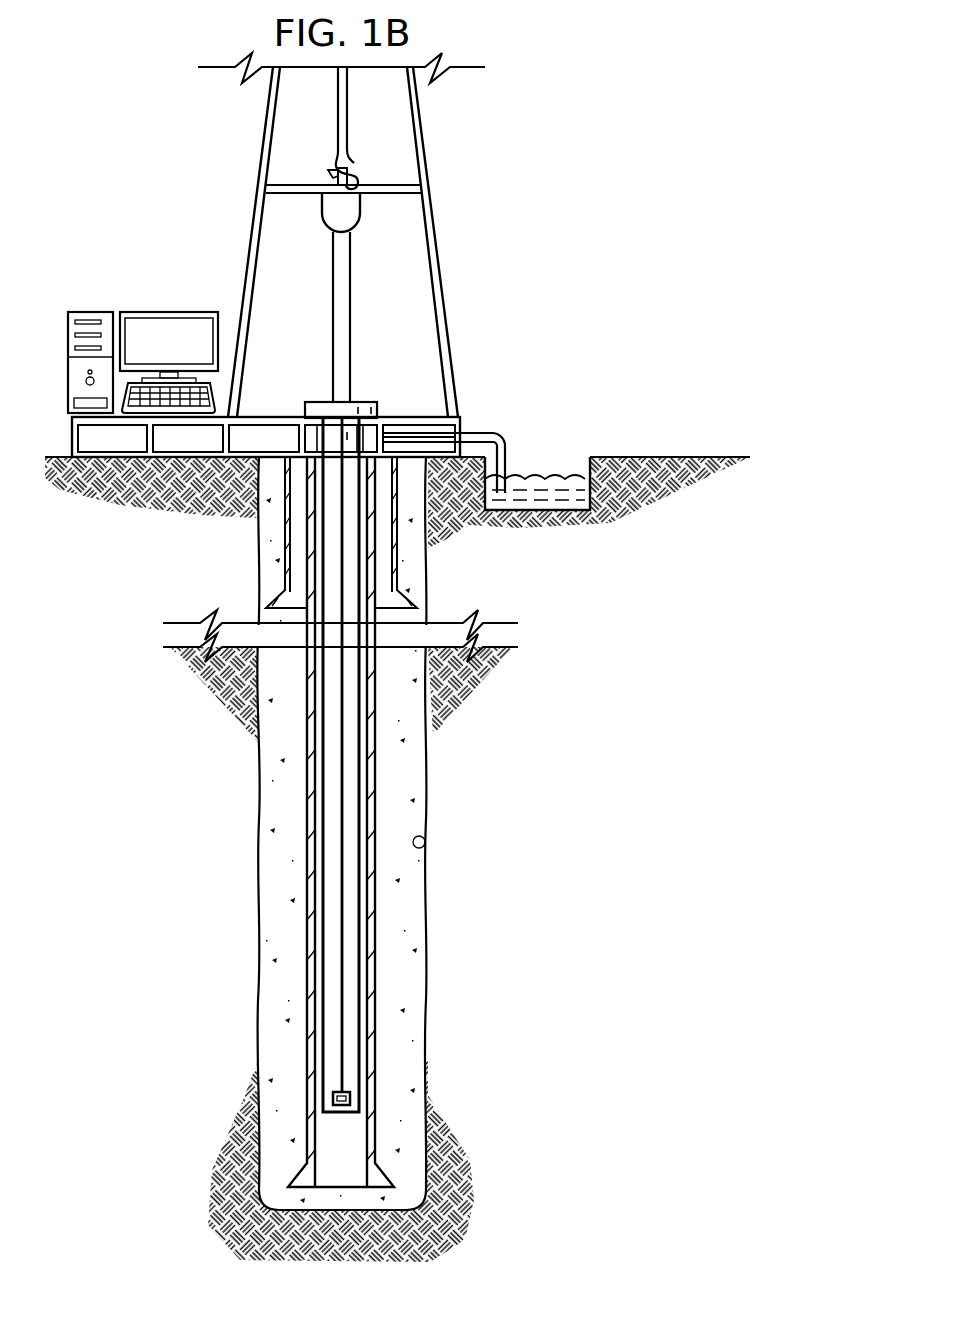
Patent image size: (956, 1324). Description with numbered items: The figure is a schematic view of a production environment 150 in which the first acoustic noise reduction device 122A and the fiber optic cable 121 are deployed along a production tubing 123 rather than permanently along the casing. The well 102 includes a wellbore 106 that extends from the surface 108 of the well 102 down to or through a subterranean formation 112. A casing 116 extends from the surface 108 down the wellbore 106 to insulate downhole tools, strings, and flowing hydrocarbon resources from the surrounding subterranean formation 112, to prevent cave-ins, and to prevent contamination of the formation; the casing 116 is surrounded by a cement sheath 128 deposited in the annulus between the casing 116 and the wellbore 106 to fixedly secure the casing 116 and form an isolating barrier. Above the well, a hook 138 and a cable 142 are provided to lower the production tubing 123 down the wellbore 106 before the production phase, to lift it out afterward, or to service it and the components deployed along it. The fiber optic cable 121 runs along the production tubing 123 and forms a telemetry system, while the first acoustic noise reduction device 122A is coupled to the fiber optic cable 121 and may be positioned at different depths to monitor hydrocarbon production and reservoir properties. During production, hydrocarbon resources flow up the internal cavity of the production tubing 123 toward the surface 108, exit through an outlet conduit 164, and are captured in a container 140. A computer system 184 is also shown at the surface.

The well 102 is at (375, 390).
The wellbore 106 is at (425, 845).
The surface 108 is at (686, 457).
The subterranean formation 112 is at (568, 746).
The casing 116 is at (373, 892).
The fiber optic cable 121 is at (342, 870).
The first acoustic noise reduction device 122A is at (333, 1097).
The production tubing 123 is at (360, 970).
The cement sheath 128 is at (418, 762).
The hook 138 is at (358, 168).
The container 140 is at (531, 512).
The cable 142 is at (336, 128).
The production environment 150 is at (183, 218).
The outlet conduit 164 is at (474, 433).
The computer system 184 is at (90, 312).